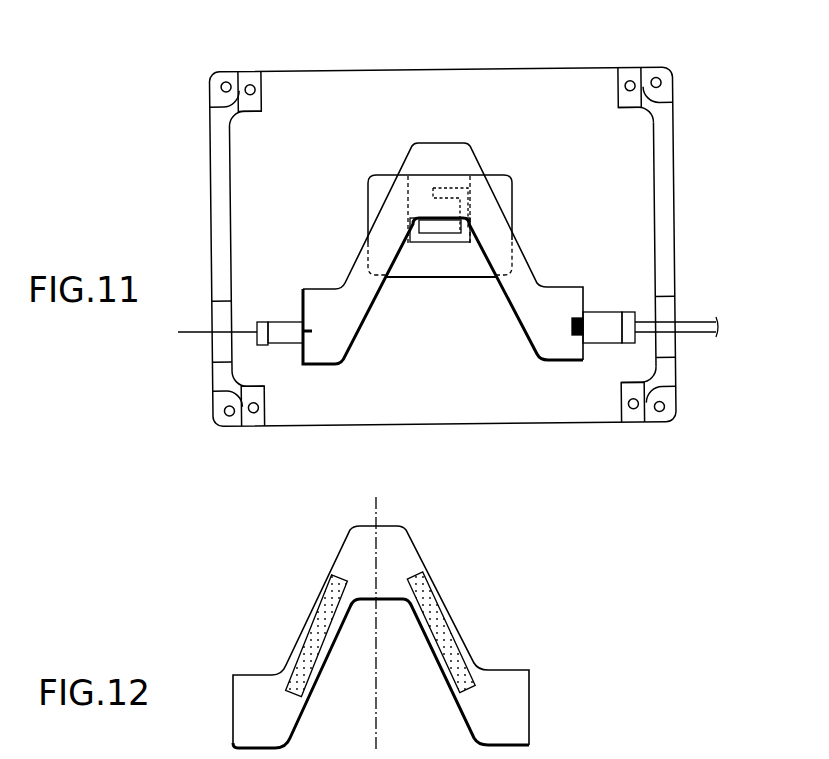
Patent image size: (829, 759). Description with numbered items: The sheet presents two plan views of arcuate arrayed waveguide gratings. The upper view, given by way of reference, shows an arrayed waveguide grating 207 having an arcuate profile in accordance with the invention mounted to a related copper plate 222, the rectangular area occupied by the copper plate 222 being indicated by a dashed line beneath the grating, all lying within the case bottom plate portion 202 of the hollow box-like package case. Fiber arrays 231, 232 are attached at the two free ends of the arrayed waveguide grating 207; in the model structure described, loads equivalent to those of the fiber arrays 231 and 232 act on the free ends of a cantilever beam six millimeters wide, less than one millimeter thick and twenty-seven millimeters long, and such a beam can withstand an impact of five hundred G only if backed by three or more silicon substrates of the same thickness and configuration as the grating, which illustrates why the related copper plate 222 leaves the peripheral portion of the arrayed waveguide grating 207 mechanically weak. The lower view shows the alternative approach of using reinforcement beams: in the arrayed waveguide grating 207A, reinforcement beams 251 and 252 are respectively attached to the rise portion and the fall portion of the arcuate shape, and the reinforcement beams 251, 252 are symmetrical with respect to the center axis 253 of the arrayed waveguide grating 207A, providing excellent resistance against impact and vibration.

In FIG. 11, the case bottom plate portion 202 is at (602, 68).
In FIG. 11, the arrayed waveguide grating 207 is at (474, 152).
In FIG. 11, the copper plate 222 is at (513, 194).
In FIG. 11, the fiber array 231 is at (283, 320).
In FIG. 11, the fiber array 232 is at (604, 312).
In FIG. 12, the arrayed waveguide grating 207A is at (428, 553).
In FIG. 12, the reinforcement beam 251 is at (308, 633).
In FIG. 12, the reinforcement beam 252 is at (450, 618).
In FIG. 12, the center axis 253 is at (378, 704).